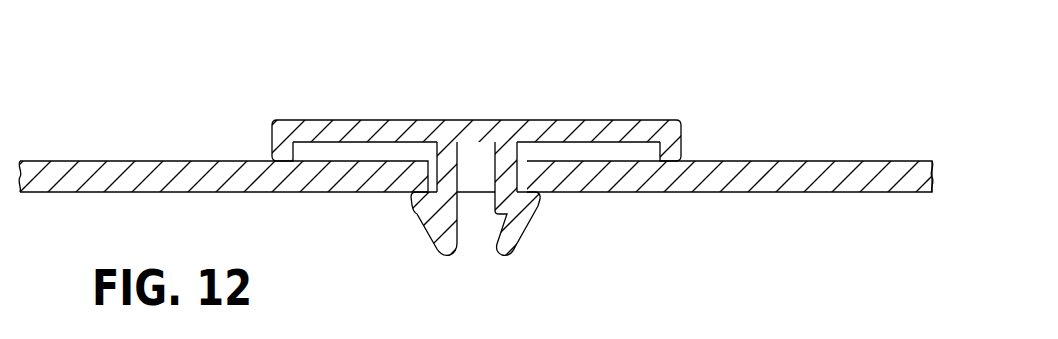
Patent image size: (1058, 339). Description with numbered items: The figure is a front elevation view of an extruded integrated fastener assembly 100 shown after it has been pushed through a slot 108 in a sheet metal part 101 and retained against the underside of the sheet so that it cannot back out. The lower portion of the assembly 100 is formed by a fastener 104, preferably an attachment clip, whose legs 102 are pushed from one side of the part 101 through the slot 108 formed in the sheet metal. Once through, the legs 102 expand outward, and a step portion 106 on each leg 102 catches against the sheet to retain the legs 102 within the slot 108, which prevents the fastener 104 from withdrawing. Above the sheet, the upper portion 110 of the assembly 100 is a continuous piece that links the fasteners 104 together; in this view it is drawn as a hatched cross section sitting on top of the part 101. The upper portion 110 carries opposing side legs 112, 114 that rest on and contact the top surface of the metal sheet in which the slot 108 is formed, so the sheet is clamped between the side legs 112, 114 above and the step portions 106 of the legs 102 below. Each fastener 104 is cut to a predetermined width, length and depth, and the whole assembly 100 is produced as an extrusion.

The extruded integrated fastener assembly 100 is at (608, 70).
The part 101 is at (902, 167).
The legs 102 is at (546, 208).
The fastener 104 is at (547, 244).
The step portion 106 is at (416, 190).
The slot 108 is at (500, 155).
The upper portion 110 is at (658, 118).
The side leg 112 is at (682, 152).
The side leg 114 is at (272, 142).